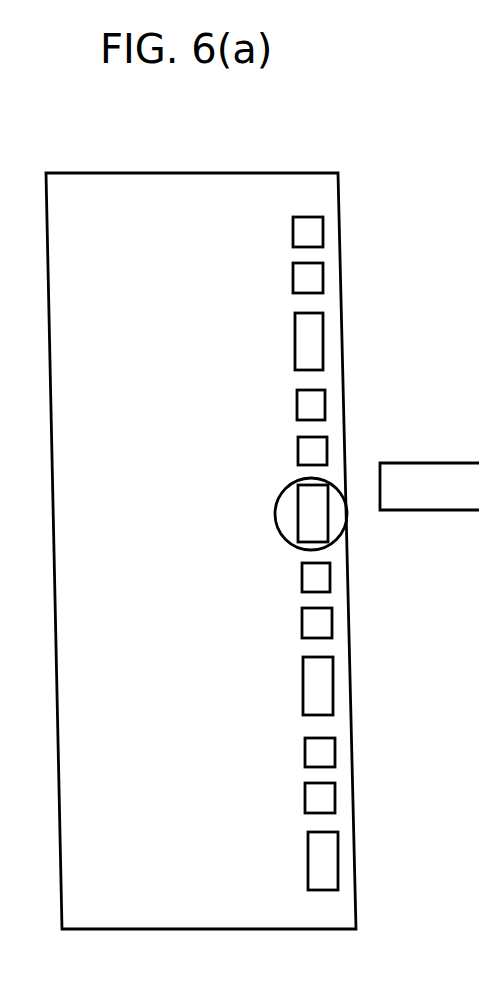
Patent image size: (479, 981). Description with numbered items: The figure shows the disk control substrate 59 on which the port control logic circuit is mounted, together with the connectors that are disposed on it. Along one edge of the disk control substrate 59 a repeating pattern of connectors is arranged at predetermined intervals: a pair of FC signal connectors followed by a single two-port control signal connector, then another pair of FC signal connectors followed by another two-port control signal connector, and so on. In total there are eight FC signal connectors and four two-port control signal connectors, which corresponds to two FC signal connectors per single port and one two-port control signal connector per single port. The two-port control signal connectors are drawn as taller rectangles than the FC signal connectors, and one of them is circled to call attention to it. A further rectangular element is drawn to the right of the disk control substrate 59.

The disk control substrate 59 is at (136, 173).